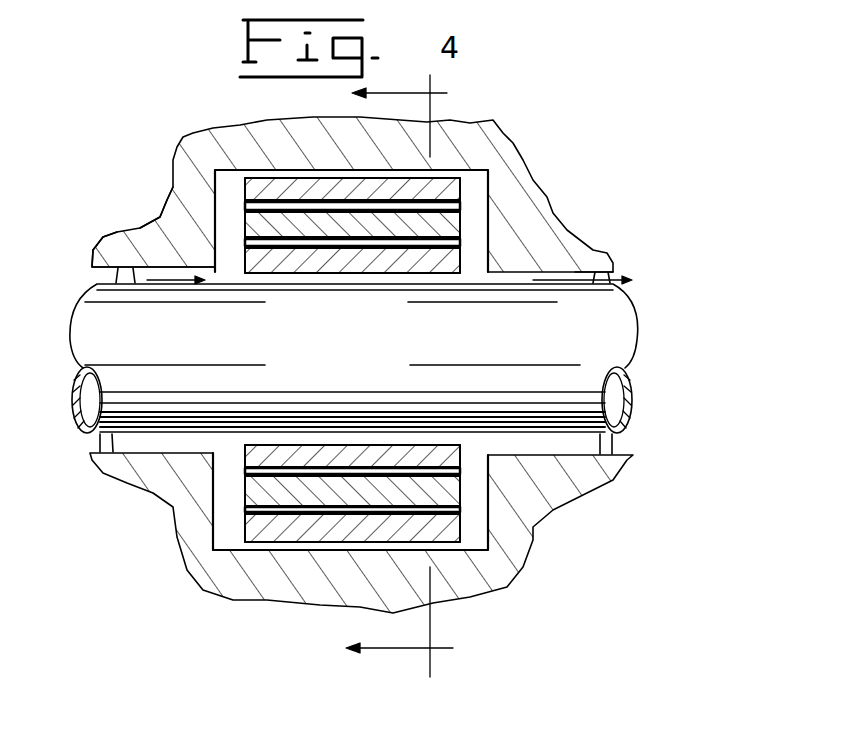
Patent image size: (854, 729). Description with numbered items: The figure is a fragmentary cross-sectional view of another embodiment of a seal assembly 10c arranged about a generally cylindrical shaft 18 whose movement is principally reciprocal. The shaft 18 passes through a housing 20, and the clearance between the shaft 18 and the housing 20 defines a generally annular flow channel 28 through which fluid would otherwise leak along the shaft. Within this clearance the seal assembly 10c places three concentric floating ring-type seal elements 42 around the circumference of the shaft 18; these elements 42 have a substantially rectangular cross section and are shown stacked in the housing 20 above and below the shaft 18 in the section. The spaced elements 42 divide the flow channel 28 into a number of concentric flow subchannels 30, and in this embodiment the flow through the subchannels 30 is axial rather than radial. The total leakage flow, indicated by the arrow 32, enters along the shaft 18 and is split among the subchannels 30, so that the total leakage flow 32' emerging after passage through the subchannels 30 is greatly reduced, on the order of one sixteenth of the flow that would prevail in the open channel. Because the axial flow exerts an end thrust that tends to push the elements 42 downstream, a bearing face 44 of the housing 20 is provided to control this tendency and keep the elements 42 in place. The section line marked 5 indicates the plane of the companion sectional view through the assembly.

The seal assembly 10c is at (293, 170).
The shaft 18 is at (606, 333).
The housing 20 is at (565, 245).
The flow channel 28 is at (117, 230).
The flow subchannels 30 is at (250, 270).
The total leakage flow 32 is at (139, 196).
The total leakage flow after passage through subchannels 32' is at (619, 334).
The floating ring-type seal elements 42 is at (443, 220).
The bearing face 44 is at (475, 165).
The section line 5- 5 is at (401, 378).